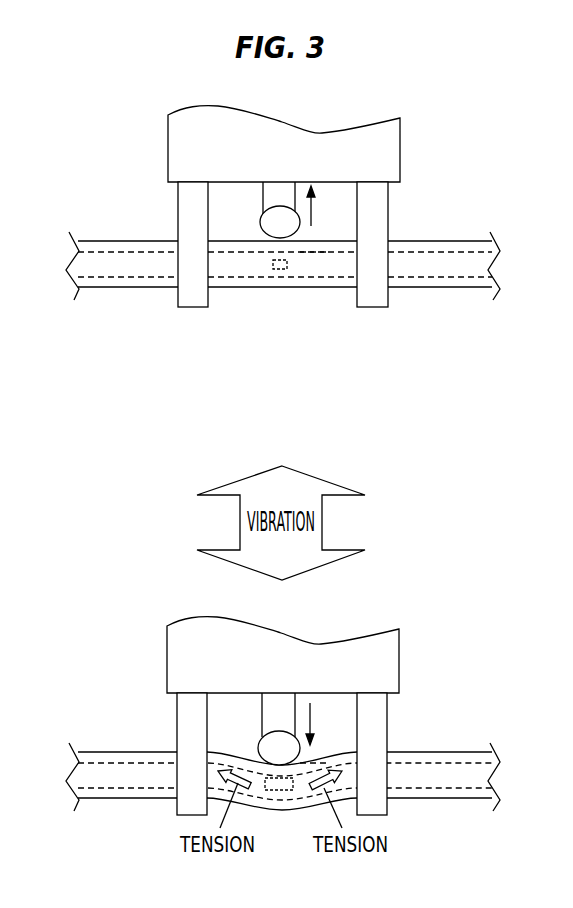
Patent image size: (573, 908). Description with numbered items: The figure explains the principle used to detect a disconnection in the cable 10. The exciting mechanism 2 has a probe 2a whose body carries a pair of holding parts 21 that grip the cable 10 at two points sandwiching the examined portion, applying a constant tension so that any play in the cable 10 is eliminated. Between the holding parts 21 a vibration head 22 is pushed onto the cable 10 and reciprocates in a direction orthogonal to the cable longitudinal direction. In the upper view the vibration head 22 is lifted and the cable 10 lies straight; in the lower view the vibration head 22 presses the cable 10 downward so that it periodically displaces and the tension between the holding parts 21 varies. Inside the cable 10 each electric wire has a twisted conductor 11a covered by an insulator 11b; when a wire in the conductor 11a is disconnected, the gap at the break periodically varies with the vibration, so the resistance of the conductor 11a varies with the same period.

The exciting mechanism 2 is at (293, 459).
The probe 2a is at (393, 151).
The cable 10 is at (94, 232).
The conductor 11a is at (455, 258).
The insulator 11b is at (286, 270).
The holding parts 21 is at (185, 297).
The vibration head 22 is at (262, 222).